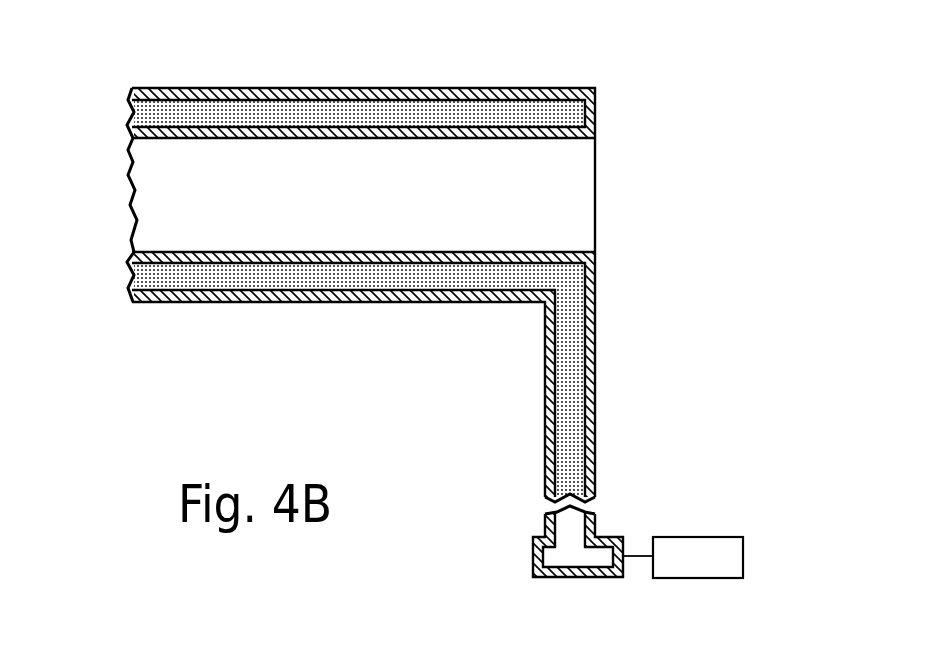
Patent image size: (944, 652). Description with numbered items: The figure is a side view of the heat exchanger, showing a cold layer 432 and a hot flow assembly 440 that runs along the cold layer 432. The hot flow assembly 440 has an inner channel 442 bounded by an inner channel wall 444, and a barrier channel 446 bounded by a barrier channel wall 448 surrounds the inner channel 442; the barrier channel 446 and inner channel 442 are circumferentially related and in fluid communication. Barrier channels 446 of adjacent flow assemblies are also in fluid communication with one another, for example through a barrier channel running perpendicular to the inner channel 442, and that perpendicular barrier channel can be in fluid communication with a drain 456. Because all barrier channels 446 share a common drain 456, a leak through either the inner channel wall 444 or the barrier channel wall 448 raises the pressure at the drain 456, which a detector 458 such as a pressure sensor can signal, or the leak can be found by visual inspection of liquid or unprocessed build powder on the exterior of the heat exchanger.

The hot flow assembly 440 is at (376, 262).
The inner channel 442 is at (287, 205).
The inner channel wall 444 is at (188, 251).
The barrier channel 446 is at (349, 112).
The barrier channel wall 448 is at (447, 93).
The cold layer 432 is at (445, 406).
The drain 456 is at (563, 553).
The detector 458 is at (722, 566).